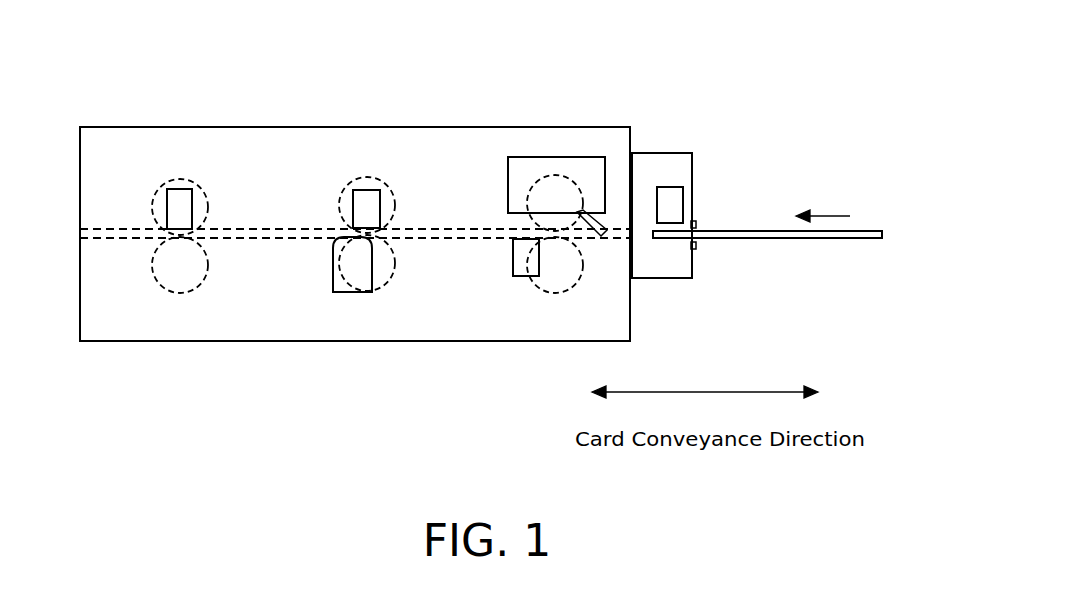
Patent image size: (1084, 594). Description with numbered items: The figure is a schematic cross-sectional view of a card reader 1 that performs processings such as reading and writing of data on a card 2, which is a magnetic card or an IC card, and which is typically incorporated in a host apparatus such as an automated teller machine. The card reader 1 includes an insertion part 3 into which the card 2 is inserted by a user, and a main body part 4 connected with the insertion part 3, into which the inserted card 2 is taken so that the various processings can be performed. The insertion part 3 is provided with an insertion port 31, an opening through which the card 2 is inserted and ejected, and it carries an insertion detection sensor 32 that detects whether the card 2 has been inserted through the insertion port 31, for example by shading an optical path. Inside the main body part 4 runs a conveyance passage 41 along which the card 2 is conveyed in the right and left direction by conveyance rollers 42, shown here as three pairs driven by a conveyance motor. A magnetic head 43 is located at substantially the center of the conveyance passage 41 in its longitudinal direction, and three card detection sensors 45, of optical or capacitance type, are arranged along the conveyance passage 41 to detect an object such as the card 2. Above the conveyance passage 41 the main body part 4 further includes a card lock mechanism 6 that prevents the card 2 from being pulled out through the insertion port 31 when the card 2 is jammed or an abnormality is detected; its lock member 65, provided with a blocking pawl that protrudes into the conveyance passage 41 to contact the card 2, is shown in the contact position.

The card reader 1 is at (660, 76).
The card 2 is at (805, 239).
The insertion part 3 is at (673, 153).
The main body part 4 is at (100, 132).
The card lock mechanism 6 is at (517, 165).
The insertion port 31 is at (697, 242).
The insertion detection sensor 32 is at (676, 203).
The conveyance passage 41 is at (270, 240).
The conveyance rollers 42 is at (180, 178).
The magnetic head 43 is at (336, 292).
The card detection sensors 45 is at (175, 190).
The lock member 65 is at (598, 218).